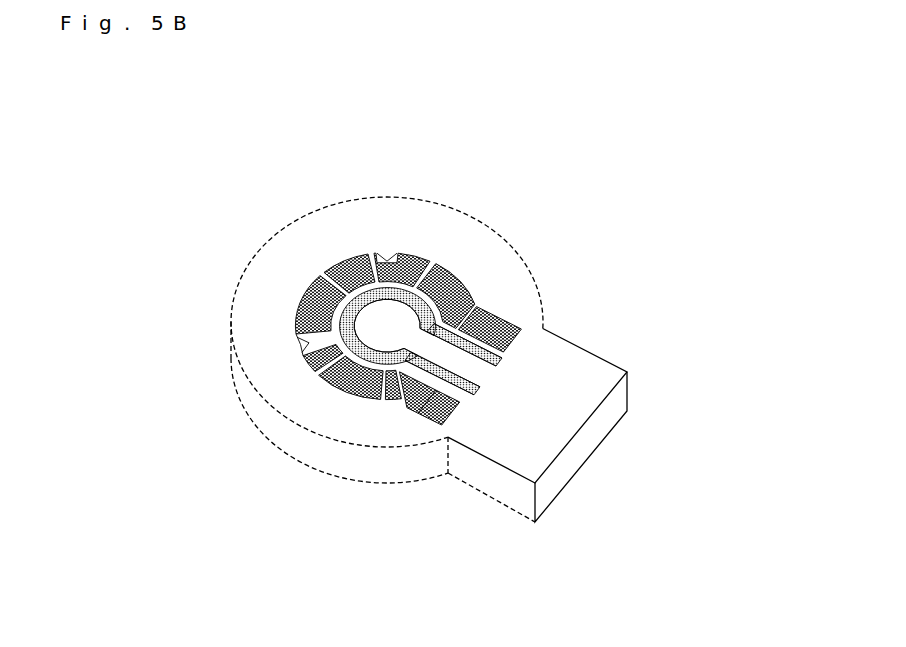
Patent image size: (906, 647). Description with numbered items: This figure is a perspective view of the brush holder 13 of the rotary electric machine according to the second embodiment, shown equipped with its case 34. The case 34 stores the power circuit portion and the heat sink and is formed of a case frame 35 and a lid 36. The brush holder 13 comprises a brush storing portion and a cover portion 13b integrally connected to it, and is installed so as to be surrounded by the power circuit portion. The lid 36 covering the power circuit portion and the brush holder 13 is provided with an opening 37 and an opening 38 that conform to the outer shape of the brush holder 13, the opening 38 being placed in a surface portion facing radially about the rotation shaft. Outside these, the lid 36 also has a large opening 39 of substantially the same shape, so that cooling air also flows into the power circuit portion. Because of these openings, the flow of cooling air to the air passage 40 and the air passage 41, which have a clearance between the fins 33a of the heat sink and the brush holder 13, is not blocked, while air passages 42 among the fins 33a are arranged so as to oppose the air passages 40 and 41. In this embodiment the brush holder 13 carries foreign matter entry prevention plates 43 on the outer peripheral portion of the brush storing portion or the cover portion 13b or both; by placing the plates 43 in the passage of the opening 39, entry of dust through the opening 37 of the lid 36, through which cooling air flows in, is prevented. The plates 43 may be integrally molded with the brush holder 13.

The brush holder 13 is at (449, 438).
The cover portion 13b is at (393, 372).
The fins 33a is at (298, 304).
The case 34 is at (290, 233).
The case frame 35 is at (428, 462).
The lid 36 is at (572, 366).
The opening 37 is at (474, 391).
The opening 38 is at (352, 392).
The opening 39 is at (298, 330).
The air passage 40 is at (499, 363).
The air passage 41 is at (307, 282).
The air passages 42 is at (297, 313).
The foreign matter entry prevention plates 43 is at (312, 360).